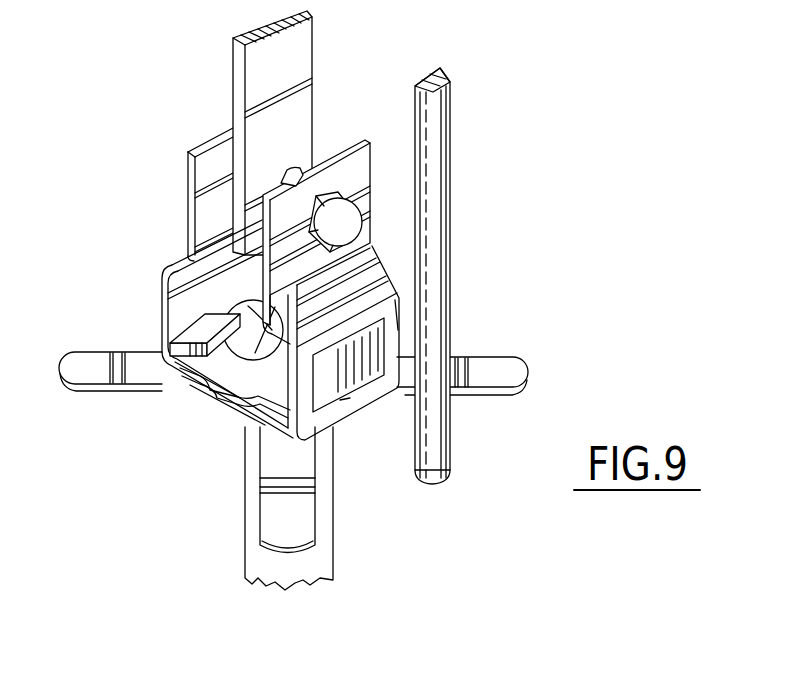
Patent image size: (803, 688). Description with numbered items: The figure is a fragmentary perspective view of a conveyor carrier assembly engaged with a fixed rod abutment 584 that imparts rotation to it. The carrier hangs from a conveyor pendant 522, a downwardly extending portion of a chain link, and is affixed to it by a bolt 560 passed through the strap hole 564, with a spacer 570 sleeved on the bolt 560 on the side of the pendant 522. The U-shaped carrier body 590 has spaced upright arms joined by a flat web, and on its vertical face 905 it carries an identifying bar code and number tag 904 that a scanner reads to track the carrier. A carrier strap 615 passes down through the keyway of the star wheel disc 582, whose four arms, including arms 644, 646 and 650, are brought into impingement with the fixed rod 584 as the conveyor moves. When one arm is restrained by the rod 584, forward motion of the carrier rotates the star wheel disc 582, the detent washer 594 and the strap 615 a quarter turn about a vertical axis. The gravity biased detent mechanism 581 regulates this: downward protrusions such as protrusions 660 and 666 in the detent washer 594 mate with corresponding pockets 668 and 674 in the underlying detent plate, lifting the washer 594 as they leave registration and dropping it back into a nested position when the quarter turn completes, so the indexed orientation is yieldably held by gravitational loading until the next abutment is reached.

The conveyor pendant 522 is at (310, 33).
The strap hole 564 is at (283, 175).
The spacer 570 is at (298, 173).
The U-shaped carrier body 590 is at (186, 184).
The detent protrusion 666 is at (232, 326).
The detent pocket 674 is at (206, 306).
The detent washer 594 is at (236, 329).
The star wheel arm 650 is at (77, 351).
The gravity biased detent mechanism 581 is at (195, 365).
The detent pocket 668 is at (213, 401).
The star wheel disc 582 is at (223, 405).
The carrier strap 615 is at (248, 468).
The star wheel arm 644 is at (276, 524).
The bolt 560 is at (347, 223).
The fixed abutment rod 584 is at (447, 240).
The vertical face 905 is at (390, 327).
The star wheel arm 646 is at (498, 363).
The detent protrusion 660 is at (283, 313).
The bar code and number tag 904 is at (348, 402).